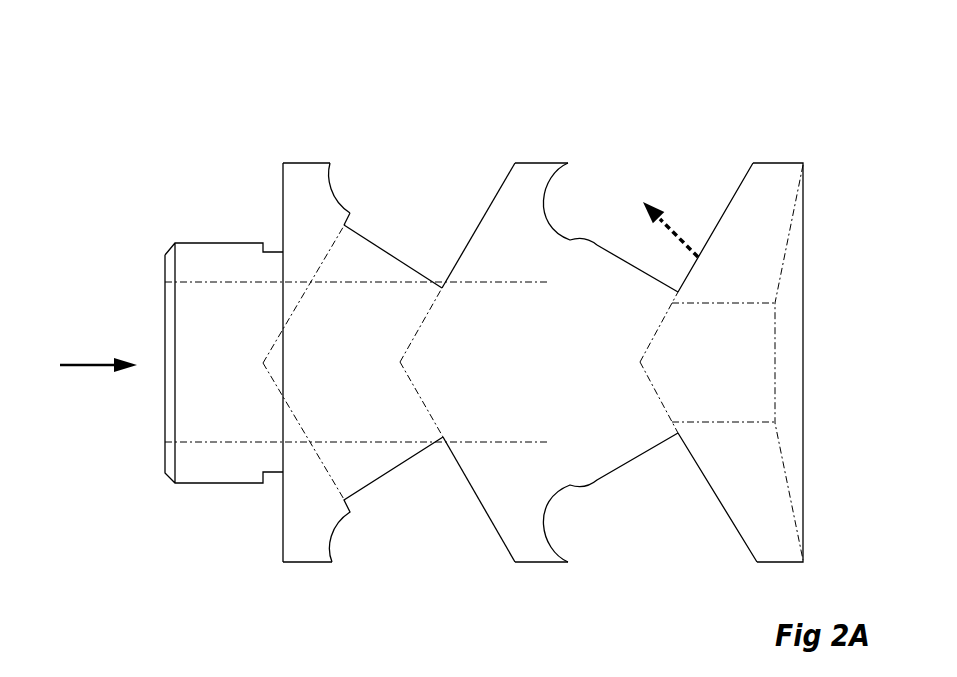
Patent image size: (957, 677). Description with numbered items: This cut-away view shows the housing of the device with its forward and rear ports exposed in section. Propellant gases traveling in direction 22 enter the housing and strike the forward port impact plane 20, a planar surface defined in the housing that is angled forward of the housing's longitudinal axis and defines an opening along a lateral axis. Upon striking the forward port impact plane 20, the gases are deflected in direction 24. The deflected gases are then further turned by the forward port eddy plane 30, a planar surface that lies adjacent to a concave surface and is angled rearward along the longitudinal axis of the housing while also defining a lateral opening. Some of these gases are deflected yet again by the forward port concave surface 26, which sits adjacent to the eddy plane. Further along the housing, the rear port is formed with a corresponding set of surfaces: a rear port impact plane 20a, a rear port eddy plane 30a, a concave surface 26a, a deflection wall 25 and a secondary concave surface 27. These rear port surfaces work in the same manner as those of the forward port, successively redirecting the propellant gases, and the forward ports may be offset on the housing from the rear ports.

The forward port impact plane 20 is at (717, 223).
The rear port impact plane 20a is at (498, 188).
The direction of propellant gas travel 22 is at (95, 366).
The deflection direction 24 is at (670, 225).
The deflection wall 25 is at (375, 250).
The forward port concave surface 26 is at (543, 200).
The concave surface 26a is at (334, 176).
The secondary concave surface 27 is at (350, 212).
The forward port eddy plane 30 is at (620, 253).
The rear port eddy plane 30a is at (412, 267).